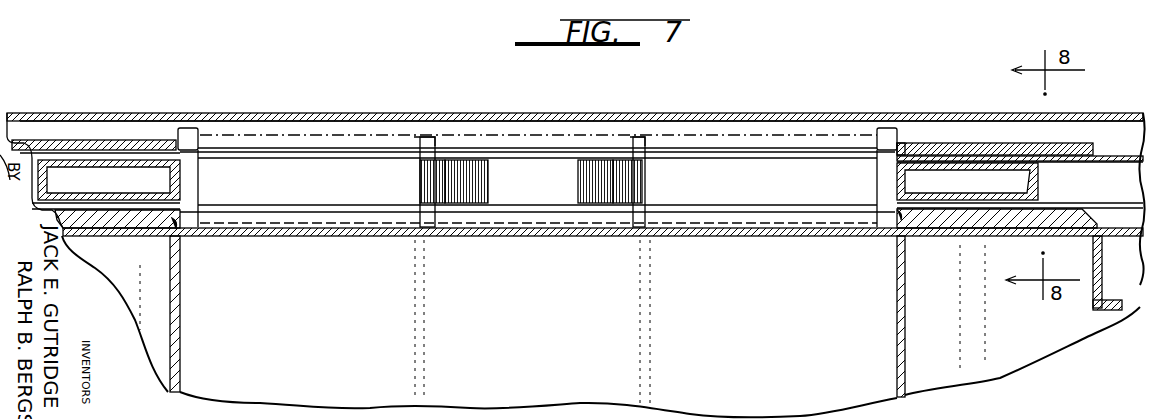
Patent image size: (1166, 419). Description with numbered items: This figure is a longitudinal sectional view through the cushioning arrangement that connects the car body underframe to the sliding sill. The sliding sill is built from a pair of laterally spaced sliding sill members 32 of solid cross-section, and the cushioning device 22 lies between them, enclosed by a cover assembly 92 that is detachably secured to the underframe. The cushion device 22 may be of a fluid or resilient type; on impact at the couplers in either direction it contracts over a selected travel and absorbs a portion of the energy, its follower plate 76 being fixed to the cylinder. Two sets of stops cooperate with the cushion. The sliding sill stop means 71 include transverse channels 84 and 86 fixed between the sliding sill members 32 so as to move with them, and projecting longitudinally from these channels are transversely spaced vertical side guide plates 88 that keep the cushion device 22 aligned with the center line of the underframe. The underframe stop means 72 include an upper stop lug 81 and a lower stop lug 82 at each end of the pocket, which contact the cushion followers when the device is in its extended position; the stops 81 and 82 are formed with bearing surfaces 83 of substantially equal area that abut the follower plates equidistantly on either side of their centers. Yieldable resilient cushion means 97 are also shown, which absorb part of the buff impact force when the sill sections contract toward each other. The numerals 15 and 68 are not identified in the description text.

The outer tube wall 15 is at (212, 118).
The cushioning device 22 is at (403, 137).
The sliding sill members 32 is at (470, 195).
The sleeve 68 is at (1100, 157).
The sliding sill stop means 71 is at (183, 179).
The underframe stop means 72 is at (178, 238).
The follower plate 76 is at (878, 126).
The upper stop lug 81 is at (190, 147).
The lower stop lug 82 is at (103, 222).
The bearing surfaces 83 is at (186, 147).
The transverse channel 84 is at (97, 169).
The transverse channel 86 is at (970, 166).
The vertical side guide plates 88 is at (380, 185).
The cover assembly 92 is at (724, 114).
The yieldable resilient cushion means 97 is at (603, 141).